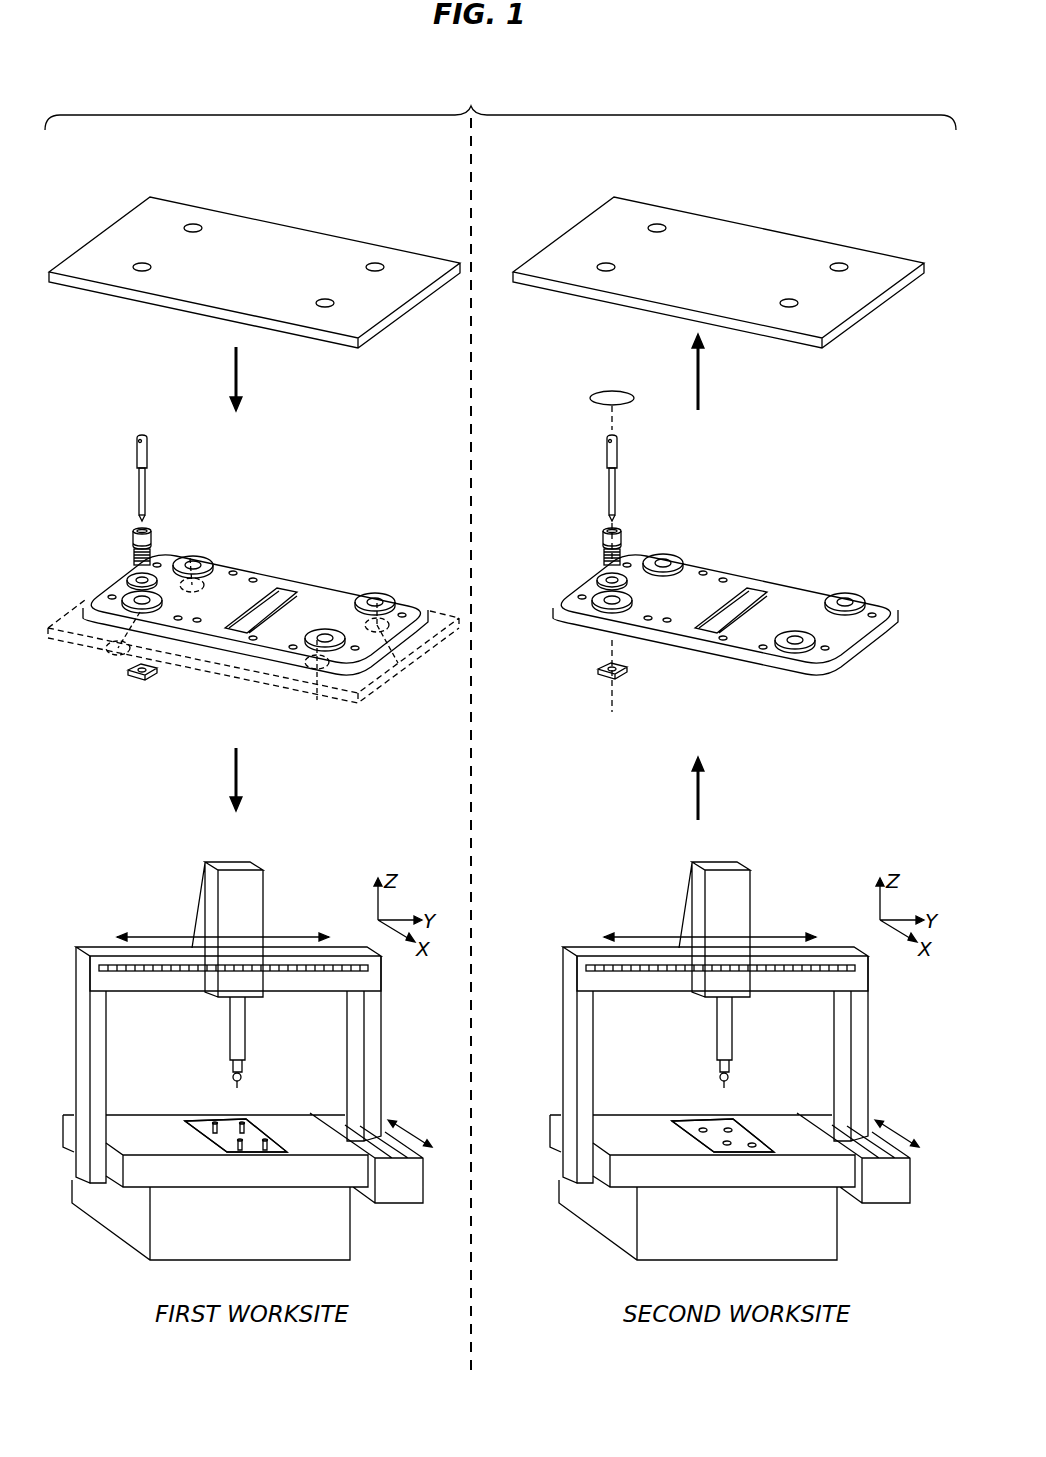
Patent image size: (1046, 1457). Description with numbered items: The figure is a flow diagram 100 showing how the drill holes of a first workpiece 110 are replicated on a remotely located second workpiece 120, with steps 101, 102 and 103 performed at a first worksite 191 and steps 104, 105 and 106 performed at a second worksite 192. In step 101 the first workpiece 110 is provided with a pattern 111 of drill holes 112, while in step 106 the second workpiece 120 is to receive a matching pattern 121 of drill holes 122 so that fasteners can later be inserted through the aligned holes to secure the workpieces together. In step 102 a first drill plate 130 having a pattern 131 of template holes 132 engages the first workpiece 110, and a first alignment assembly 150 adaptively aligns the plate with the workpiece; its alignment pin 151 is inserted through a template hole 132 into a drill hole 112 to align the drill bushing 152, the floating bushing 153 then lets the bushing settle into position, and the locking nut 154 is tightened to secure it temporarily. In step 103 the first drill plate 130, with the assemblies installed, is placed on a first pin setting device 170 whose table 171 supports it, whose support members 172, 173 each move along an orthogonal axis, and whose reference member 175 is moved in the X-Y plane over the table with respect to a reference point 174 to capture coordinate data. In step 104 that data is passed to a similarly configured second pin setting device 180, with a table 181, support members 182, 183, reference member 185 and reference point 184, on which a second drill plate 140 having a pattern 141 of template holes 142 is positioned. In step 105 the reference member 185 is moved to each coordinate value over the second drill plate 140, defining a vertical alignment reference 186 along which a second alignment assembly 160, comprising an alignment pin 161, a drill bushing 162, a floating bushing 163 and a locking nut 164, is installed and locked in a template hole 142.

The flow diagram 100 is at (500, 105).
The step 101 is at (150, 176).
The step 102 is at (122, 432).
The step 103 is at (117, 864).
The step 104 is at (851, 829).
The step 105 is at (883, 496).
The step 106 is at (873, 176).
The first workpiece 110 is at (282, 222).
The pattern 111 is at (364, 258).
The drill holes 112 is at (193, 224).
The second workpiece 120 is at (745, 222).
The pattern 121 is at (826, 259).
The drill holes 122 is at (656, 225).
The first drill plate 130 is at (300, 576).
The pattern 131 is at (322, 619).
The template holes 132 is at (193, 560).
The second drill plate 140 is at (777, 569).
The pattern 141 is at (825, 598).
The template holes 142 is at (663, 562).
The first alignment assembly 150 is at (205, 1168).
The alignment pin 151 is at (137, 482).
The drill bushing 152 is at (132, 533).
The floating bushing 153 is at (136, 562).
The locking nut 154 is at (132, 682).
The second alignment assembly 160 is at (635, 516).
The alignment pin 161 is at (605, 467).
The drill bushing 162 is at (602, 543).
The floating bushing 163 is at (606, 570).
The locking nut 164 is at (600, 672).
The first pin setting device 170 is at (278, 911).
The table 171 is at (295, 1122).
The support member 172 is at (381, 1064).
The support member 173 is at (252, 988).
The reference point 174 is at (187, 1123).
The reference member 175 is at (241, 1087).
The second pin setting device 180 is at (766, 911).
The table 181 is at (782, 1123).
The support member 182 is at (868, 1064).
The support member 183 is at (739, 988).
The reference point 184 is at (673, 1123).
The reference member 185 is at (598, 395).
The alignment reference 186 is at (615, 420).
The first worksite 191 is at (264, 1356).
The second worksite 192 is at (749, 1356).